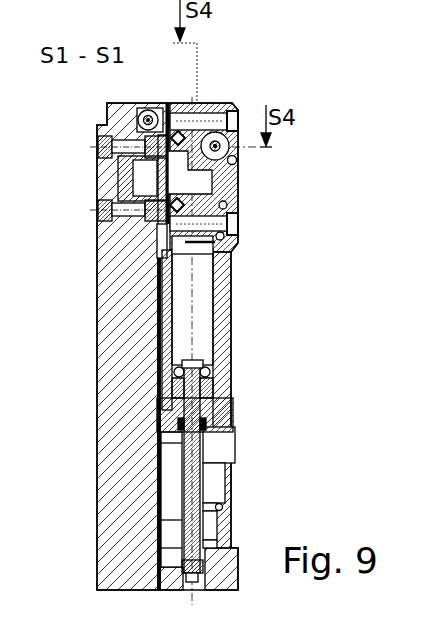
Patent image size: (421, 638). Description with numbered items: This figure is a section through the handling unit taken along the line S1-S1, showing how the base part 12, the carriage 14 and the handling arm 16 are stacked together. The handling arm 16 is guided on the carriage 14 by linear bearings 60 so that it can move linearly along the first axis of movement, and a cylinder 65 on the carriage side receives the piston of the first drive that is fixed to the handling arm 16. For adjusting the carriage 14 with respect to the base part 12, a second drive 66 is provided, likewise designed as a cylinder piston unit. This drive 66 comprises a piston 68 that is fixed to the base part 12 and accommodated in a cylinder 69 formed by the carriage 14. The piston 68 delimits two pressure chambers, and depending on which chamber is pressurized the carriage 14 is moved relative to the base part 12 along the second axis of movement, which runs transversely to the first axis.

The base part 12 is at (117, 354).
The carriage 14 is at (238, 178).
The handling arm 16 is at (196, 198).
The linear bearings 60 is at (173, 106).
The cylinder 65 is at (228, 108).
The second drive 66 is at (208, 354).
The piston 68 is at (213, 382).
The cylinder 69 is at (198, 305).